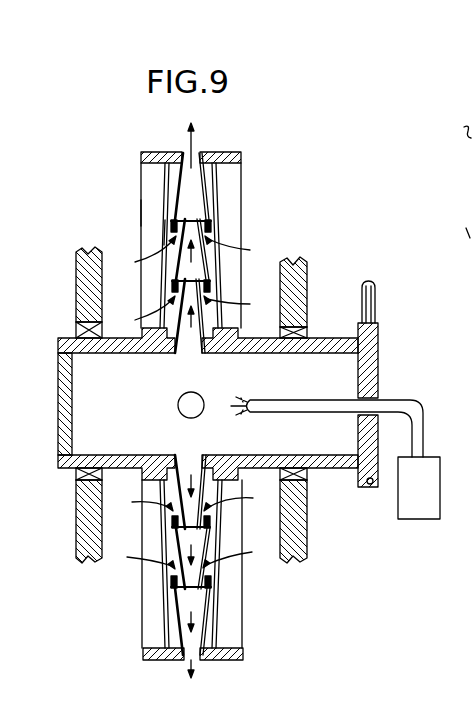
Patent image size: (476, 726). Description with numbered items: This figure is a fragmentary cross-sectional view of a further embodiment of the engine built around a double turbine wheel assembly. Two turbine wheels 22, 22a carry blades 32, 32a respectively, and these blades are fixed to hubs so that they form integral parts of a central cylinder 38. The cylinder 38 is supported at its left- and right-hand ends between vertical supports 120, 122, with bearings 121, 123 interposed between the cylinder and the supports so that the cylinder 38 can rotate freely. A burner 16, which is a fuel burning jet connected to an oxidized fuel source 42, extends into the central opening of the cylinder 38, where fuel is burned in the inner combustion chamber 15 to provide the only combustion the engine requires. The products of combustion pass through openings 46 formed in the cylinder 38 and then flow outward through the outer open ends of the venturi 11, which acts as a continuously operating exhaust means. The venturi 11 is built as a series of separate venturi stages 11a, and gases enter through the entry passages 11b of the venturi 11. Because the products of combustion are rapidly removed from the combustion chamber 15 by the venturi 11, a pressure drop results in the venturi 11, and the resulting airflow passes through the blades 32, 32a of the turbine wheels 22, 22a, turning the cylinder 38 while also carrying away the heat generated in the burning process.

The venturi 11 is at (167, 185).
The venturi stage 11a is at (182, 604).
The entry passage 11b is at (210, 236).
The turbine wheel 22 is at (245, 189).
The turbine wheel 22a is at (134, 213).
The blades 32 is at (232, 208).
The blades 32a is at (152, 232).
The vertical support 120 is at (77, 292).
The bearing 121 is at (77, 333).
The vertical support 122 is at (299, 264).
The bearing 123 is at (277, 353).
The combustion chamber 15 is at (251, 388).
The openings 46 is at (178, 406).
The burner 16 is at (314, 412).
The central cylinder 38 is at (337, 470).
The oxidized fuel source 42 is at (432, 501).